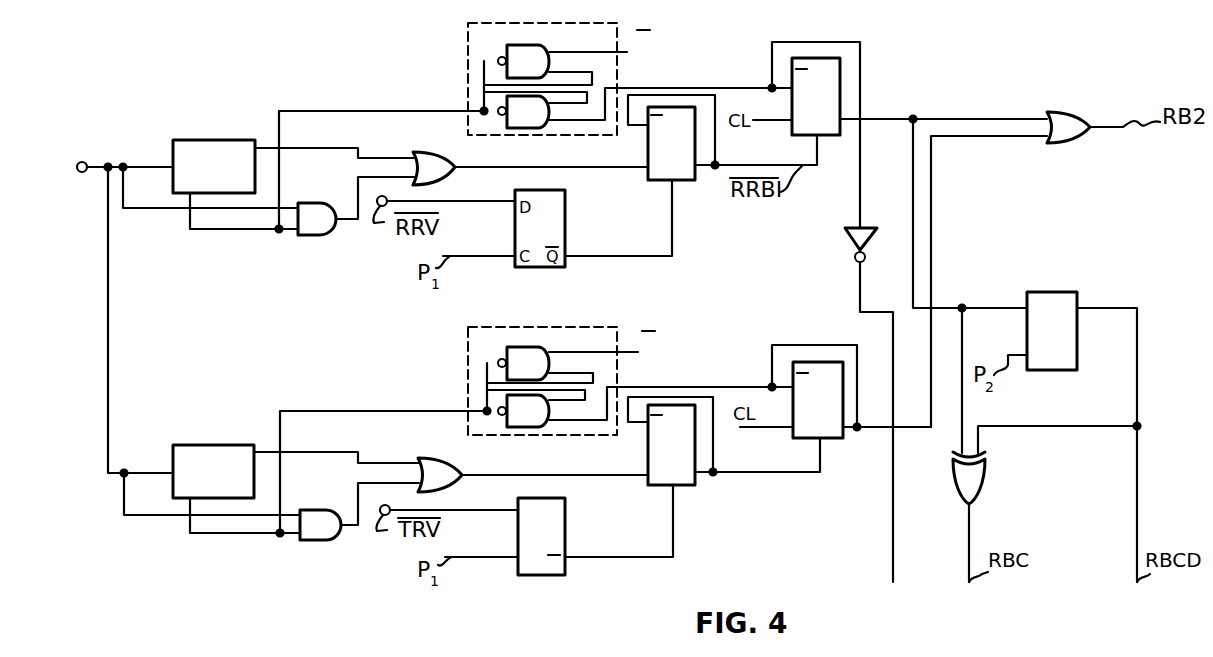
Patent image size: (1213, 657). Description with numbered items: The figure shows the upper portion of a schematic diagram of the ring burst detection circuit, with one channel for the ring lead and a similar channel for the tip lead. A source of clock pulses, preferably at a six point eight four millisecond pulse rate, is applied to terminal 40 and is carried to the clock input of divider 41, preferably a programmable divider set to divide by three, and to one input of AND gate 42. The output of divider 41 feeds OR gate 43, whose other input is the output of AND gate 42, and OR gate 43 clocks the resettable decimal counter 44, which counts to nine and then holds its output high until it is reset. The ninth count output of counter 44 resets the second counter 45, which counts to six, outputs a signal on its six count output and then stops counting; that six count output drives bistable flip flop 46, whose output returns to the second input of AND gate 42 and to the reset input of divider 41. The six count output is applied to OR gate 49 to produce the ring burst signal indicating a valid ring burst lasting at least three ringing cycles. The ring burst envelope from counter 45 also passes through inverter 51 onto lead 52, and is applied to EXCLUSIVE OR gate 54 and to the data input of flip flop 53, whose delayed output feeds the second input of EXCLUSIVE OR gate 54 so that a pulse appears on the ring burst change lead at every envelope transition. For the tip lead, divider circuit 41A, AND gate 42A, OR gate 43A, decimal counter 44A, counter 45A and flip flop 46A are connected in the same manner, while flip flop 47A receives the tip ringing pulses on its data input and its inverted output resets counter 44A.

The terminal 40 is at (88, 163).
The divider 41 is at (236, 140).
The AND gate 42 is at (327, 192).
The OR gate 43 is at (425, 151).
The resettable decimal counter 44 is at (646, 186).
The second counter 45 is at (838, 140).
The bistable flip flop 46 is at (468, 65).
The OR gate 49 is at (1090, 113).
The inverter 51 is at (852, 244).
The lead 52 is at (893, 542).
The flip flop 53 is at (1050, 291).
The EXCLUSIVE OR gate 54 is at (986, 482).
The divider circuit 41A is at (244, 445).
The AND gate 42A is at (320, 542).
The OR gate 43A is at (446, 488).
The decimal counter 44A is at (673, 486).
The counter 45A is at (808, 440).
The flip flop 46A is at (468, 347).
The flip flop 47A is at (542, 578).